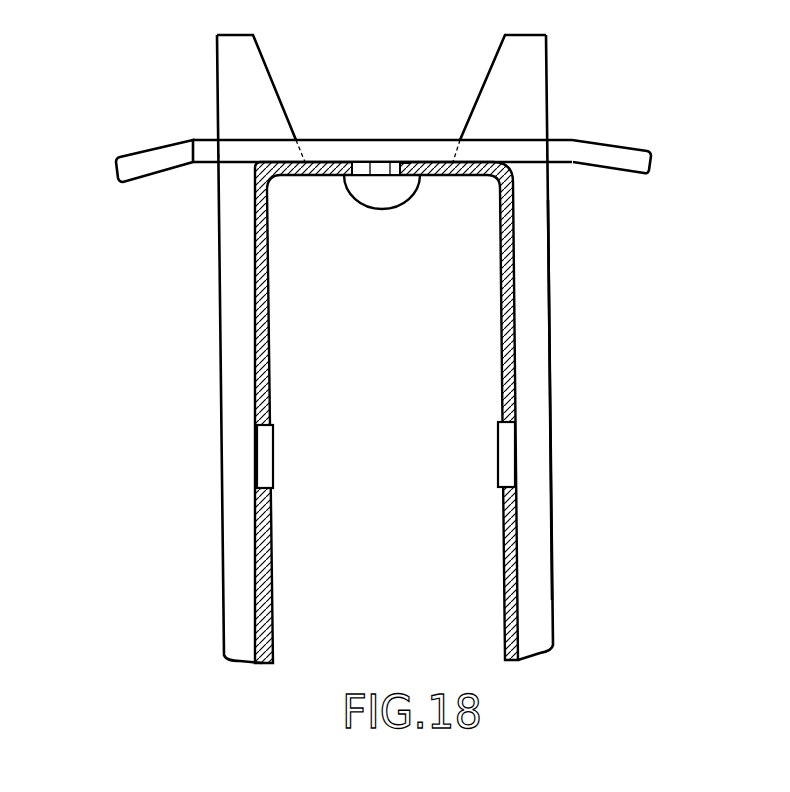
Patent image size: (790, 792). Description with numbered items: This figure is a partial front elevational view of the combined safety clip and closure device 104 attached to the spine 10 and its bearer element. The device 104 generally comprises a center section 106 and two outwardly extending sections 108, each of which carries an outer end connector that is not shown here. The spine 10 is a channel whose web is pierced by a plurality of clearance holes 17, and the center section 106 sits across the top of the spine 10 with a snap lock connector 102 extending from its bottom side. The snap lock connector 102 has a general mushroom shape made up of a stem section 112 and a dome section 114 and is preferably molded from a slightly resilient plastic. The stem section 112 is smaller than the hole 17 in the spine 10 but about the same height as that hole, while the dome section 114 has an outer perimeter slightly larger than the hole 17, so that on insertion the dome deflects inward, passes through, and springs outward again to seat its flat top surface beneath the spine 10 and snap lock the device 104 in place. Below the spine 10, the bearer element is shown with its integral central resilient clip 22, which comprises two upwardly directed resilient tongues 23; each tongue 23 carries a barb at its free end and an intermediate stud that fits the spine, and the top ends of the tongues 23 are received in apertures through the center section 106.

The spine 10 is at (275, 580).
The clearance hole 17 is at (405, 162).
The resilient clip 22 is at (555, 570).
The resilient tongues 23 is at (222, 522).
The snap lock connector 102 is at (372, 208).
The combined safety clip and closure device 104 is at (142, 152).
The center section 106 is at (207, 163).
The outwardly extending sections 108 is at (127, 165).
The stem section 112 is at (373, 162).
The dome section 114 is at (418, 188).